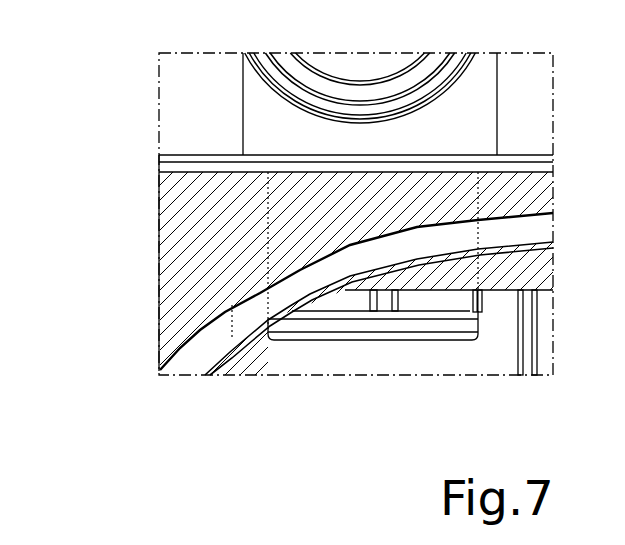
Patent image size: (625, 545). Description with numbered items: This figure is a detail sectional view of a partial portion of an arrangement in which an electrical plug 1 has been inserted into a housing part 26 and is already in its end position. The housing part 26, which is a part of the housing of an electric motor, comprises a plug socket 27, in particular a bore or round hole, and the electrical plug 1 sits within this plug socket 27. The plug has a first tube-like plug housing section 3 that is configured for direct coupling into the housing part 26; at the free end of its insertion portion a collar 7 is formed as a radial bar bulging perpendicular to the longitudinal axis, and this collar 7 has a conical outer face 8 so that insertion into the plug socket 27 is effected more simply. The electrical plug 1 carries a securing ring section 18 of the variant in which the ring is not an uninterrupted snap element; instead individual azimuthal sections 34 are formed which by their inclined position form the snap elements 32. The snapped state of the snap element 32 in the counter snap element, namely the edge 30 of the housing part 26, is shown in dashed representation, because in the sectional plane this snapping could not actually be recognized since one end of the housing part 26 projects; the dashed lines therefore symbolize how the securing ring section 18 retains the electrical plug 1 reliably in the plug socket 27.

The electrical plug 1 is at (227, 66).
The first plug housing section 3 is at (516, 91).
The collar 7 is at (489, 338).
The conical outer face 8 is at (385, 342).
The securing ring section 18 is at (356, 320).
The housing part 26 is at (139, 199).
The plug socket 27 is at (224, 146).
The edge 30 is at (253, 293).
The snap element 32 is at (160, 366).
The azimuthal sections 34 is at (325, 303).